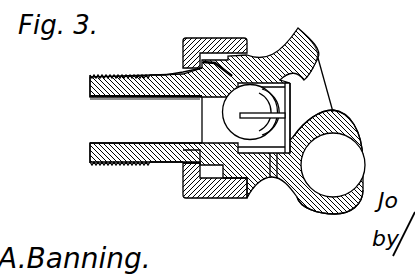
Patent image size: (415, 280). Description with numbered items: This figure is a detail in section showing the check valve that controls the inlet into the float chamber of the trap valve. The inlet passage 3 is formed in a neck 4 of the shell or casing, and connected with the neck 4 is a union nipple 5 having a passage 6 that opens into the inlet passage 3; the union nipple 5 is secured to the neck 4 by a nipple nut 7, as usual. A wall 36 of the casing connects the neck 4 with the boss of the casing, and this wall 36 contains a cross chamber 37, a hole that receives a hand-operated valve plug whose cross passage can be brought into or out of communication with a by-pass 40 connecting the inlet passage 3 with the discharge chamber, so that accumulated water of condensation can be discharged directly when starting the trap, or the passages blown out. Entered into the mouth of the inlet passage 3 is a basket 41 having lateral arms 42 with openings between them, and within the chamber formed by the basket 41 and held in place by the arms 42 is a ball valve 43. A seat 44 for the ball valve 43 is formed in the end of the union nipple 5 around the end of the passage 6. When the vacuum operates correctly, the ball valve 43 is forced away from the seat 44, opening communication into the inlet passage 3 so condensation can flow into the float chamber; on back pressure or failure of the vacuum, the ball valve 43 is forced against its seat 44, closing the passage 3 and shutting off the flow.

The inlet passage 3 is at (318, 79).
The neck 4 is at (226, 121).
The union nipple 5 is at (146, 109).
The passage 6 is at (146, 119).
The nipple nut 7 is at (215, 109).
The wall 36 is at (327, 214).
The cross chamber 37 is at (333, 165).
The by-pass 40 is at (307, 151).
The basket 41 is at (302, 111).
The lateral arms 42 is at (259, 83).
The ball valve 43 is at (254, 112).
The seat 44 is at (186, 168).